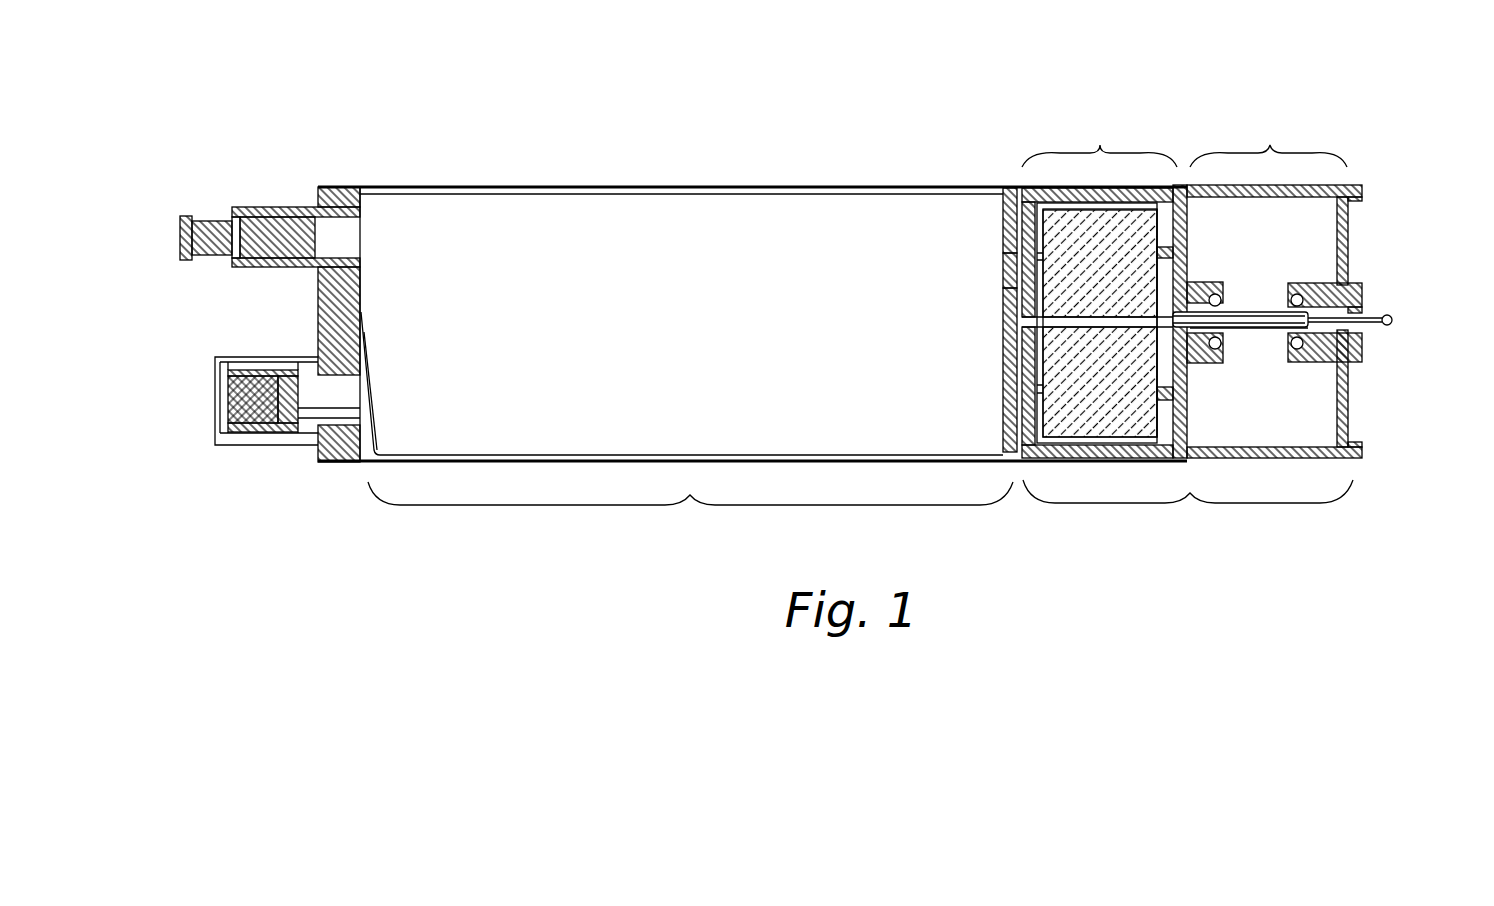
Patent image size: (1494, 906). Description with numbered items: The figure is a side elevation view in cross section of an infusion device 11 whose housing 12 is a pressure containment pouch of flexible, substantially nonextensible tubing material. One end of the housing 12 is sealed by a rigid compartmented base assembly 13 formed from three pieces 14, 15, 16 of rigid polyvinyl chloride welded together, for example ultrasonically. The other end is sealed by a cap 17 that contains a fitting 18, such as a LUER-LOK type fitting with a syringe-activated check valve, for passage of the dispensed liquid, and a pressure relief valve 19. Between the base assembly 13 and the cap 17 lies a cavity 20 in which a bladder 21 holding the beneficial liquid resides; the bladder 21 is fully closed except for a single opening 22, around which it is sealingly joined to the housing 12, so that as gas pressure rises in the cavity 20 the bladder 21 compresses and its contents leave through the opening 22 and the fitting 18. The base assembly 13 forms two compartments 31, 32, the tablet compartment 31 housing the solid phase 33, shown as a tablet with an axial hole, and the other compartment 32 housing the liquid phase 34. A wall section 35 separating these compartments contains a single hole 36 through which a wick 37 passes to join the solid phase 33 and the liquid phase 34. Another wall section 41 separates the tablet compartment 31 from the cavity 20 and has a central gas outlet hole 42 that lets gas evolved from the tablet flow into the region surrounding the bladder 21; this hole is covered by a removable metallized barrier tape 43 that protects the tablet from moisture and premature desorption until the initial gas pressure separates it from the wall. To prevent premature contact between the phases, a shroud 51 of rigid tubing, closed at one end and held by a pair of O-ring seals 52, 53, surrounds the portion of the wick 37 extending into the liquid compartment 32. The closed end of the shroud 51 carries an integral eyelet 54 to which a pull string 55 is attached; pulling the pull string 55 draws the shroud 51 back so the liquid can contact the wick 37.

The infusion device 11 is at (335, 116).
The housing 12 is at (557, 187).
The base assembly 13 is at (1188, 509).
The base assembly piece 14 is at (1283, 460).
The base assembly piece 15 is at (1190, 410).
The base assembly piece 16 is at (1122, 455).
The cap 17 is at (335, 455).
The fitting 18 is at (280, 207).
The pressure relief valve 19 is at (253, 382).
The cavity 20 is at (690, 513).
The bladder 21 is at (457, 457).
The opening 22 is at (353, 230).
The tablet compartment 31 is at (1099, 277).
The liquid phase compartment 32 is at (1268, 138).
The solid phase 33 is at (1073, 223).
The liquid phase 34 is at (1313, 215).
The wall section 35 is at (1347, 245).
The hole 36 is at (1165, 308).
The wick 37 is at (1095, 327).
The wall section 41 is at (1017, 253).
The gas outlet hole 42 is at (1017, 288).
The barrier tape 43 is at (1017, 318).
The shroud 51 is at (1255, 330).
The O-ring seal 52 is at (1223, 347).
The O-ring seal 53 is at (1347, 278).
The eyelet 54 is at (1330, 337).
The pull string 55 is at (1378, 310).